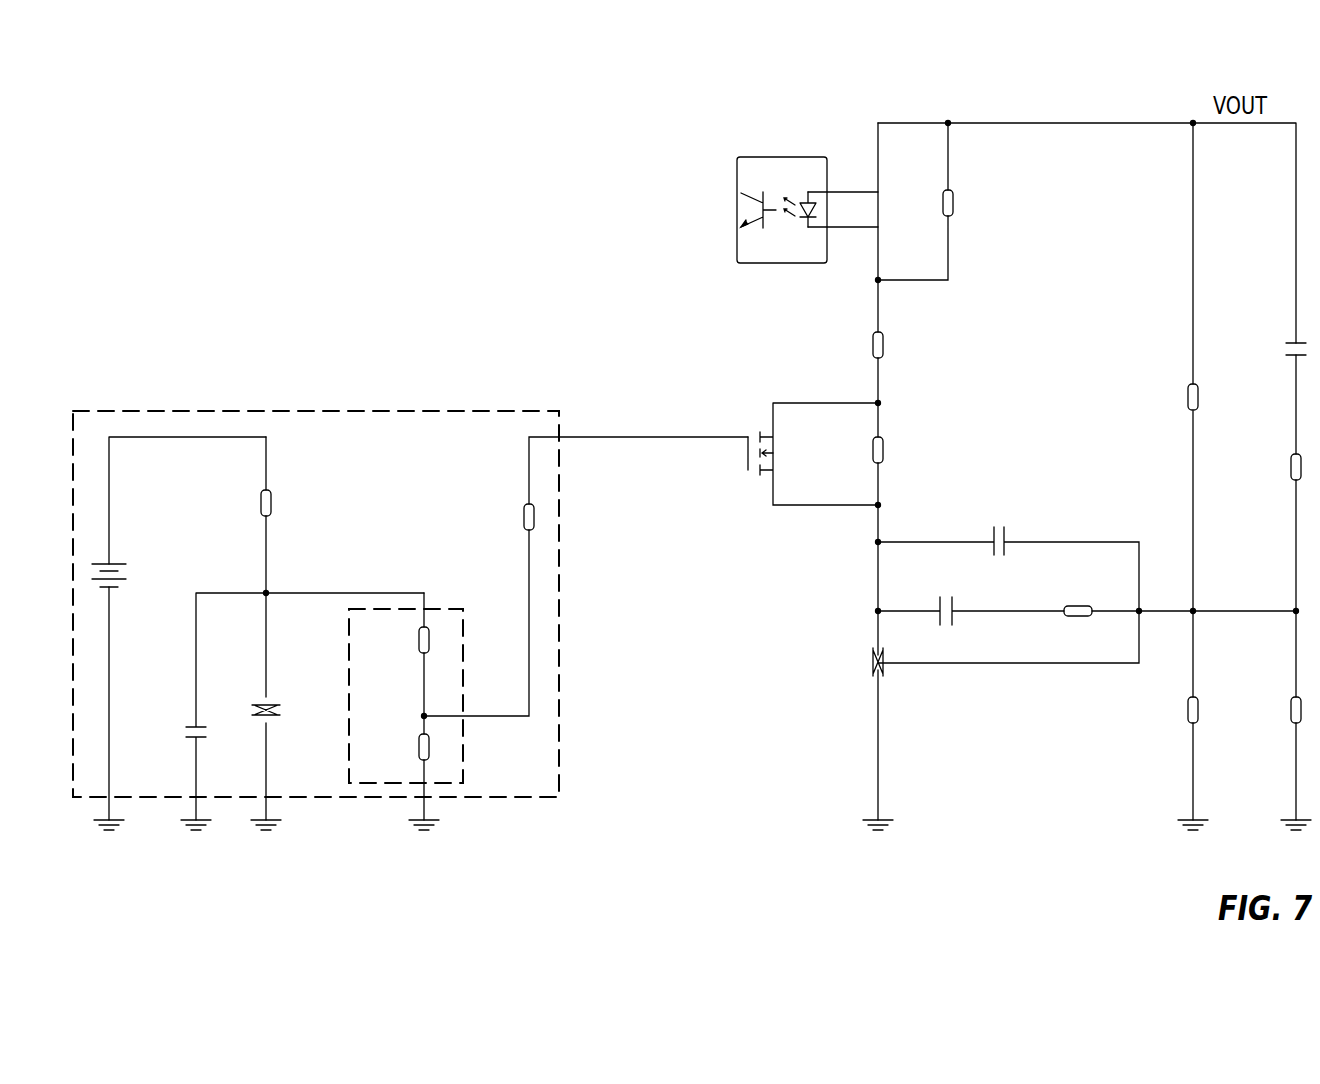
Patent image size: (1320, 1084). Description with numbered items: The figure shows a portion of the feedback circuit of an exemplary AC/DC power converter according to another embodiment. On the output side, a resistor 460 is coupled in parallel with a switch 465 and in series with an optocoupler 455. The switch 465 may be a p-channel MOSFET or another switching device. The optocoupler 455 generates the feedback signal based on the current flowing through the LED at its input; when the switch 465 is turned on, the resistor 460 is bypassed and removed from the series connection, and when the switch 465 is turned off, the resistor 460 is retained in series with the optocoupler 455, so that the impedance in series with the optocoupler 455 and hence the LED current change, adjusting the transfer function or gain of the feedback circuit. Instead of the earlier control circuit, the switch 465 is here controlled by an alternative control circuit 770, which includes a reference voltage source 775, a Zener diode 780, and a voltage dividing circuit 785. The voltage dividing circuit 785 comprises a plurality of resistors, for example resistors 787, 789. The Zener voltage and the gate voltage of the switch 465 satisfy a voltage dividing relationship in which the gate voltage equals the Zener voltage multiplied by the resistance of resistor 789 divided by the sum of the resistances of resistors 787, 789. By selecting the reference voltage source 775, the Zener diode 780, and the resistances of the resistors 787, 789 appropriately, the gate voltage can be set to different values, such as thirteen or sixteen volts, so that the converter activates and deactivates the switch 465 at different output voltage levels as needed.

The control circuit 770 is at (308, 402).
The reference voltage source 775 is at (114, 560).
The Zener diode 780 is at (272, 702).
The voltage dividing circuit 785 is at (445, 603).
The resistor 787 is at (418, 652).
The resistor 789 is at (418, 755).
The optocoupler 455 is at (790, 272).
The resistor 460 is at (884, 446).
The switch 465 is at (752, 482).